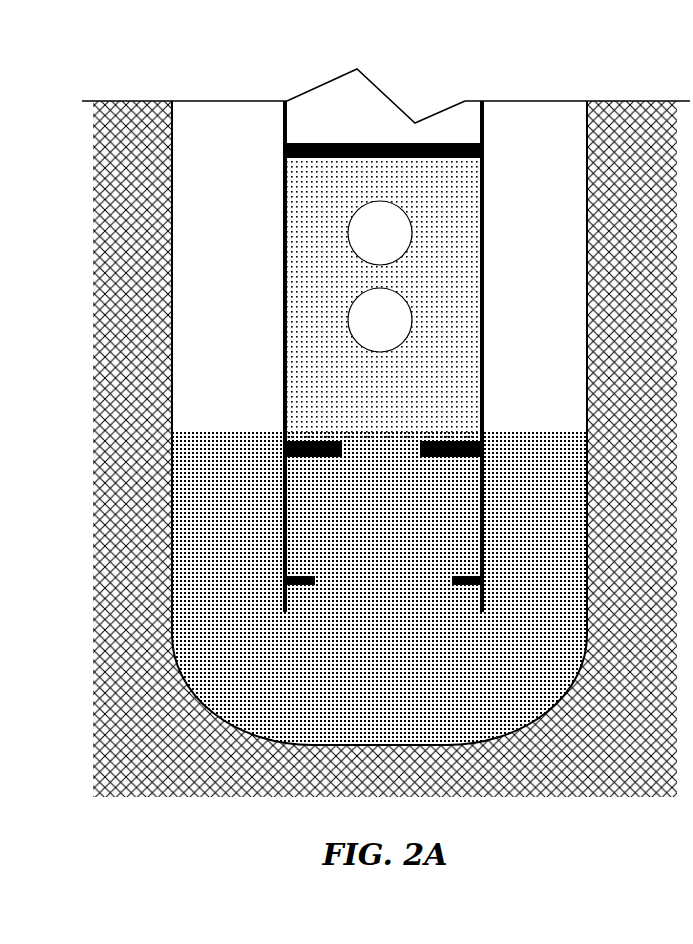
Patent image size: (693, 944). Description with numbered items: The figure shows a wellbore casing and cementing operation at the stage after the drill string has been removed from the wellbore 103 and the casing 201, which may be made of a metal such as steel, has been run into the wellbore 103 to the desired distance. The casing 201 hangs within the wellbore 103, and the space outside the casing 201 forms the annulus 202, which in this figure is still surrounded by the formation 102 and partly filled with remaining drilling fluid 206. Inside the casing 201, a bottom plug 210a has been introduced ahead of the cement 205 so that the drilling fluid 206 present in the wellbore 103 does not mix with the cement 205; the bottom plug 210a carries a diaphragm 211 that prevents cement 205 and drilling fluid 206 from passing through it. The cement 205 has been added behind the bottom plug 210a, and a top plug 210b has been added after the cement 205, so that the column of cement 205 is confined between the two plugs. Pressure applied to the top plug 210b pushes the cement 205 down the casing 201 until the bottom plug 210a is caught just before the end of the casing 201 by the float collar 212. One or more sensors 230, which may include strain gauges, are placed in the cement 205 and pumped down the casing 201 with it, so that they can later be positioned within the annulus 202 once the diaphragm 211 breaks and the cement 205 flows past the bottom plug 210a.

The subterranean formation 102 is at (124, 108).
The wellbore 103 is at (530, 70).
The annulus 202 is at (238, 116).
The casing 201 is at (487, 191).
The top plug 210b is at (340, 142).
The bottom plug 210a is at (457, 435).
The cement 205 is at (336, 273).
The sensors 230 is at (380, 276).
The drilling fluid 206 is at (263, 453).
The diaphragm 211 is at (392, 438).
The float collar 212 is at (467, 570).